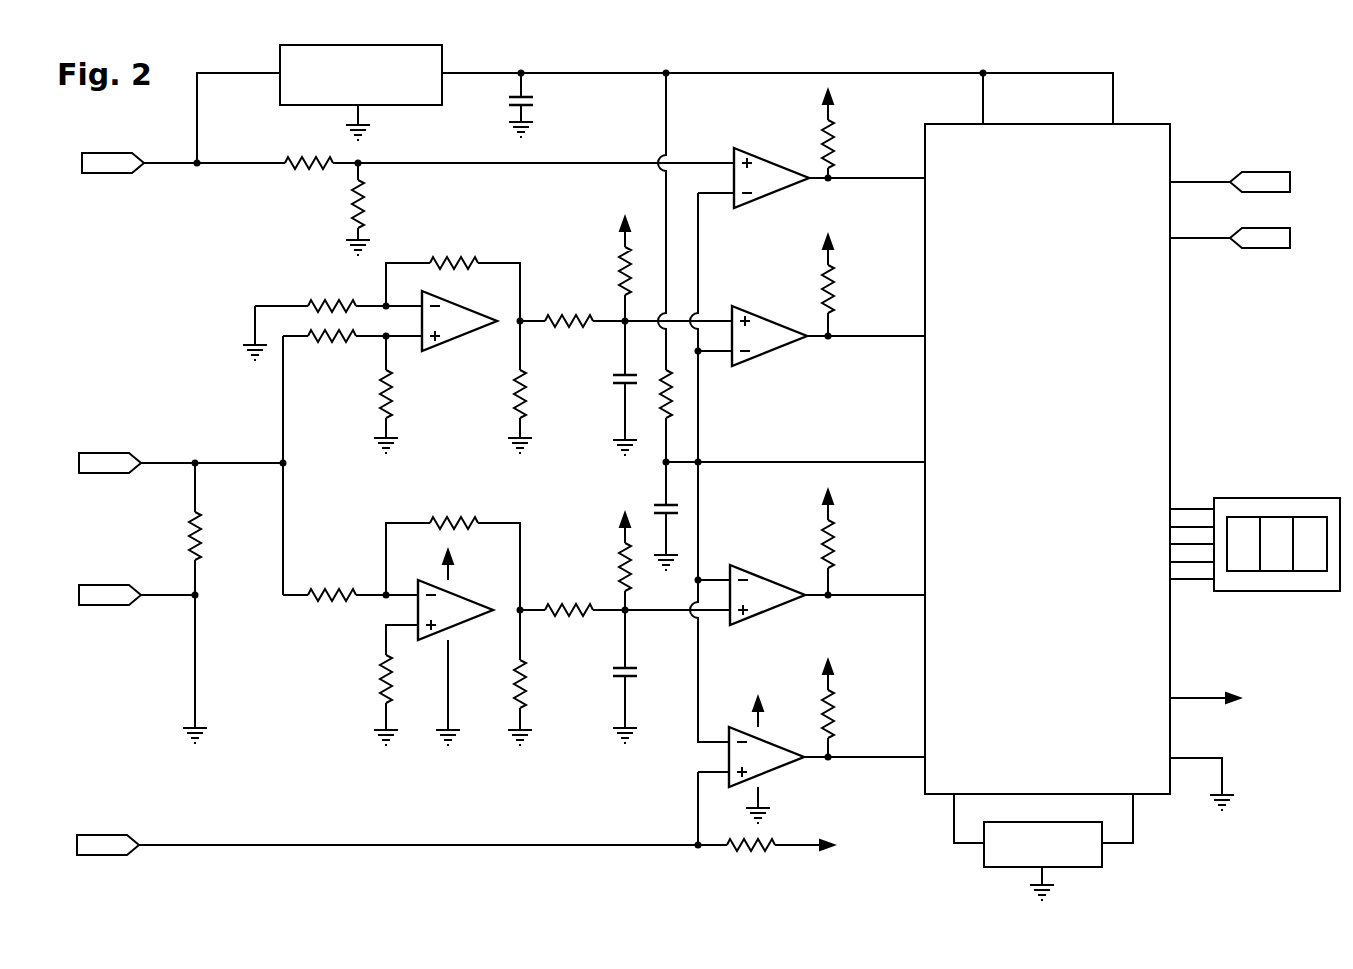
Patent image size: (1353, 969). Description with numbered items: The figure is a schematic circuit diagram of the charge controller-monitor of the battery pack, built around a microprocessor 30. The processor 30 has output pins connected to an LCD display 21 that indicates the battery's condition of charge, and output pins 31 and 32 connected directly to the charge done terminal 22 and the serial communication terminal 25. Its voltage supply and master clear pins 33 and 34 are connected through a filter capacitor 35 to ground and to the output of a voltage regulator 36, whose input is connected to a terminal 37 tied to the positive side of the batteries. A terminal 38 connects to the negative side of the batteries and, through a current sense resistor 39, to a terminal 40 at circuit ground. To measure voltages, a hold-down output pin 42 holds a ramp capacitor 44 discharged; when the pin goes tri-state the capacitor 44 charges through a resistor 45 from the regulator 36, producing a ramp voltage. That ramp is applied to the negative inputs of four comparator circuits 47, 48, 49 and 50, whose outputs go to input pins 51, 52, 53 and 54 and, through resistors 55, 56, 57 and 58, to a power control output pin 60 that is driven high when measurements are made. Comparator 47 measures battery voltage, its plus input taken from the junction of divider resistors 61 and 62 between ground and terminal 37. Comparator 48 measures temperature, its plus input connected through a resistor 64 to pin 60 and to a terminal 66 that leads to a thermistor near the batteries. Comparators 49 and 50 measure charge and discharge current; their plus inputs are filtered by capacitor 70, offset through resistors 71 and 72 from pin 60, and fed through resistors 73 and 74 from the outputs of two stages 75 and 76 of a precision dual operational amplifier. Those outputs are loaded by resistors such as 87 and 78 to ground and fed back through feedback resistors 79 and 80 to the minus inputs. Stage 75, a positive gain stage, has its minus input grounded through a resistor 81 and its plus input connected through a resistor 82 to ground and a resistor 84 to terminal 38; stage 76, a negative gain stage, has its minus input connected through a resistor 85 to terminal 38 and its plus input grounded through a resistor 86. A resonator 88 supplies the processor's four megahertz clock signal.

The LCD display 21 is at (1298, 497).
The charge done terminal 22 is at (1262, 250).
The RS-232 terminal 25 is at (1288, 178).
The microprocessor 30 is at (1176, 376).
The output pin 31 is at (1178, 237).
The output pin 32 is at (1178, 181).
The voltage supply pin 33 is at (986, 122).
The master clear pin 34 is at (1116, 122).
The filter capacitor 35 is at (533, 103).
The voltage regulator 36 is at (442, 58).
The terminal 37 is at (112, 152).
The terminal 38 is at (120, 452).
The current sense resistor 39 is at (185, 536).
The terminal 40 is at (92, 606).
The hold-down output pin 42 is at (922, 462).
The ramp capacitor 44 is at (660, 500).
The resistor 45 is at (672, 398).
The comparator circuit 47 is at (776, 165).
The comparator circuit 48 is at (768, 776).
The comparator circuit 49 is at (776, 318).
The comparator circuit 50 is at (780, 580).
The input pin 51 is at (867, 160).
The input pin 52 is at (922, 757).
The input pin 53 is at (922, 336).
The input pin 54 is at (922, 596).
The resistor 55 is at (837, 140).
The resistor 56 is at (838, 716).
The resistor 57 is at (840, 290).
The resistor 58 is at (838, 546).
The power control output pin 60 is at (826, 94).
The resistor 61 is at (370, 206).
The resistor 62 is at (302, 178).
The resistor 64 is at (616, 386).
The terminal 66 is at (100, 858).
The filter capacitor 70 is at (633, 678).
The resistor 71 is at (616, 274).
The resistor 72 is at (610, 554).
The resistor 73 is at (562, 334).
The resistor 74 is at (562, 622).
The operational amplifier stage 75 is at (460, 352).
The operational amplifier stage 76 is at (460, 632).
The resistor 78 is at (525, 678).
The feedback resistor 79 is at (470, 262).
The feedback resistor 80 is at (445, 522).
The resistor 81 is at (330, 300).
The resistor 82 is at (380, 394).
The resistor 84 is at (330, 344).
The resistor 85 is at (325, 606).
The resistor 86 is at (380, 684).
The resistor 87 is at (512, 395).
The resonator 88 is at (986, 868).